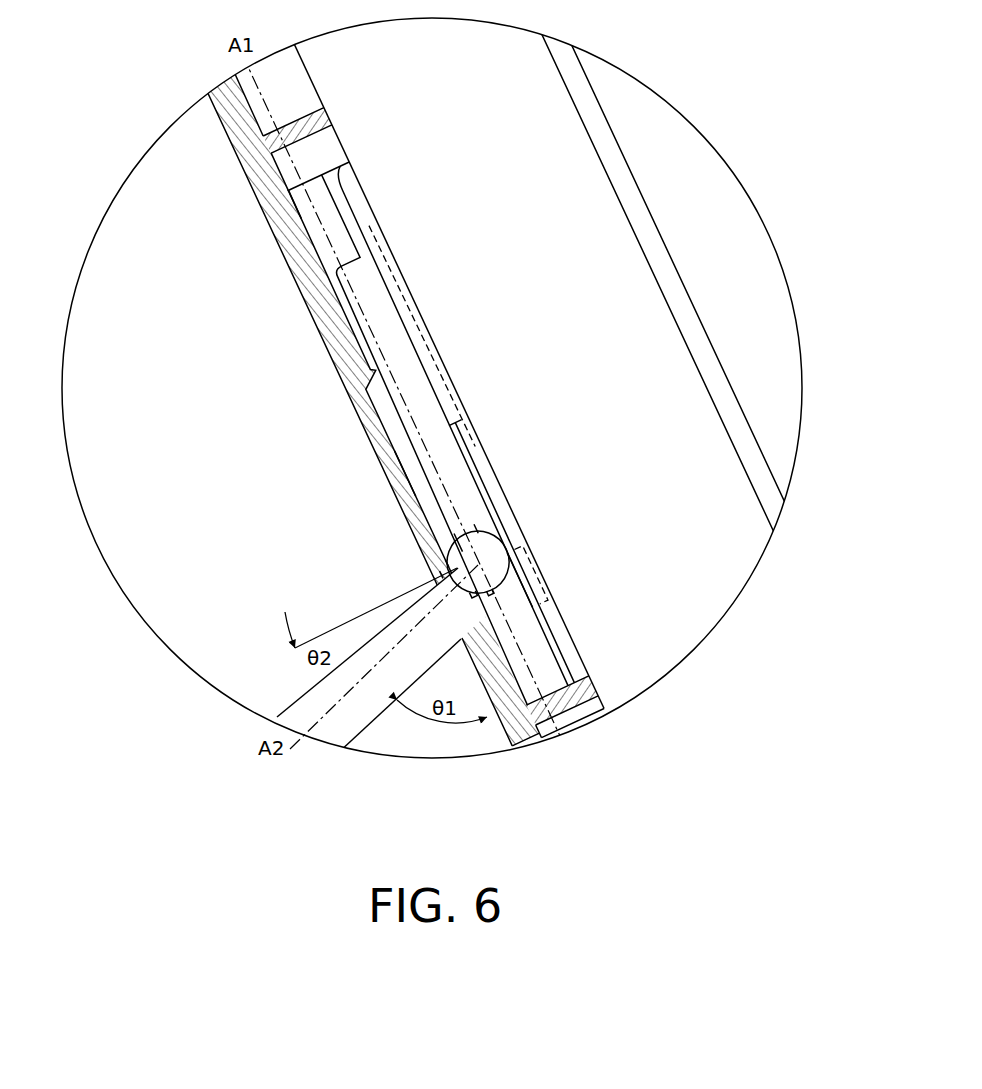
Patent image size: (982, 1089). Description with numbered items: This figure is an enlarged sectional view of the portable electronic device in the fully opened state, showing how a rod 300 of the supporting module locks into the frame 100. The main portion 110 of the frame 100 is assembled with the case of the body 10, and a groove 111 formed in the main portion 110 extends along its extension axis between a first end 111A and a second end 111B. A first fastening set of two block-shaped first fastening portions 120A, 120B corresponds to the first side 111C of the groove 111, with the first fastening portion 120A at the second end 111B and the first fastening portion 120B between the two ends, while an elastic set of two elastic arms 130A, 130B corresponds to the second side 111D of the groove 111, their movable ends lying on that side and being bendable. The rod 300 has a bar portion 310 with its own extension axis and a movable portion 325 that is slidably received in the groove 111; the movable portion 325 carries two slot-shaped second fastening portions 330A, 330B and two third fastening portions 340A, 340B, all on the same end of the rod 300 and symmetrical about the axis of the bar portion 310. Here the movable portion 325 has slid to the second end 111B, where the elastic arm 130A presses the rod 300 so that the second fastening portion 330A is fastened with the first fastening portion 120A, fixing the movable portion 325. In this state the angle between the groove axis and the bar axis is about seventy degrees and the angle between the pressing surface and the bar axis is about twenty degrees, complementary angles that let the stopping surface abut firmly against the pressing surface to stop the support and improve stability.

The body 10 is at (660, 190).
The frame 100 is at (350, 120).
The main portion 110 is at (385, 435).
The groove 111 is at (413, 433).
The first end 111A is at (308, 199).
The second end 111B is at (510, 582).
The first side 111C is at (399, 478).
The second side 111D is at (447, 400).
The first fastening portion 120A is at (472, 532).
The first fastening portion 120B is at (362, 376).
The elastic arm 130A is at (537, 535).
The elastic arm 130B is at (420, 300).
The rod 300 is at (289, 700).
The bar portion 310 is at (368, 700).
The movable portion 325 is at (500, 530).
The second fastening portion 330A is at (441, 574).
The second fastening portion 330B is at (438, 565).
The third fastening portion 340A is at (479, 600).
The third fastening portion 340B is at (493, 597).